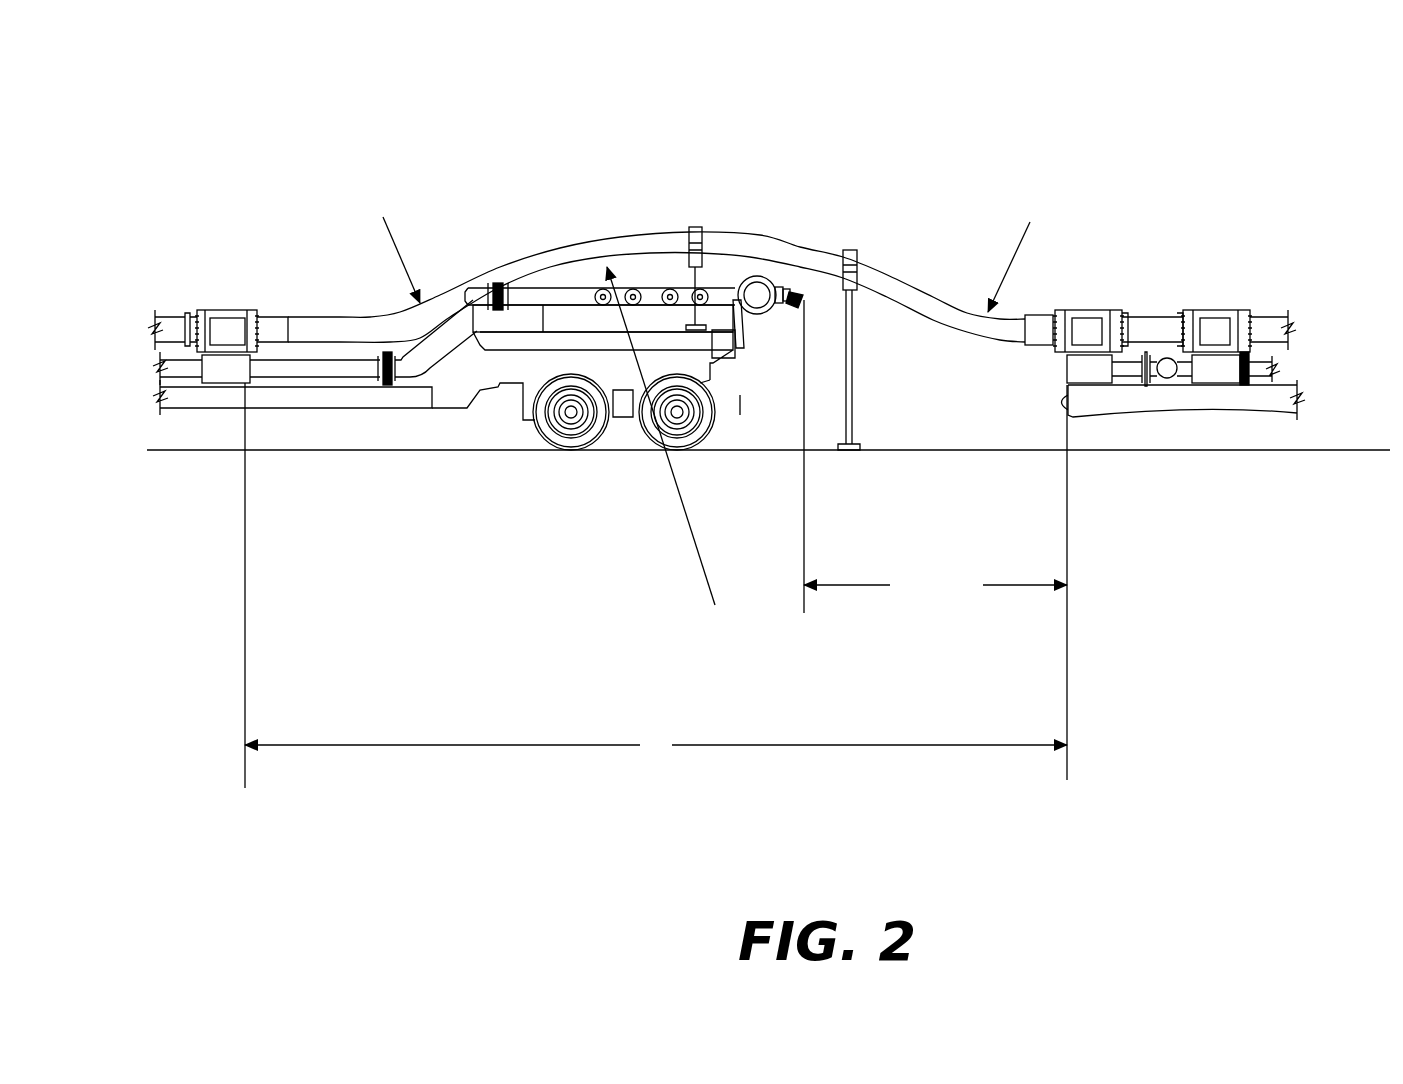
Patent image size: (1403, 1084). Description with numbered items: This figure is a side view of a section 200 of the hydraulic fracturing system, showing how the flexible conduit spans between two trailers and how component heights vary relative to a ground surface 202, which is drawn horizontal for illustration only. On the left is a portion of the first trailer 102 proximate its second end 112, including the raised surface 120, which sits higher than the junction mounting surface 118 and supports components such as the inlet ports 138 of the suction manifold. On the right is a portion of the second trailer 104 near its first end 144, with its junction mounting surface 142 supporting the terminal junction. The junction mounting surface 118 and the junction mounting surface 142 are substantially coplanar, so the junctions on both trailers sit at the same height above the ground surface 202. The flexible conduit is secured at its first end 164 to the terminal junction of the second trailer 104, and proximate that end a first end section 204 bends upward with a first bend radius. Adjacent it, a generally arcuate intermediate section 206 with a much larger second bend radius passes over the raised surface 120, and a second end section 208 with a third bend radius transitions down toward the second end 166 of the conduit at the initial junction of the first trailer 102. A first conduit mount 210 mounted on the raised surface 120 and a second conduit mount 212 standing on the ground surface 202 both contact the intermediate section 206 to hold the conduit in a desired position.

The section 200 is at (323, 97).
The first trailer 102 is at (220, 193).
The second trailer 104 is at (1285, 192).
The second end 166 is at (283, 317).
The second end section 208 is at (397, 322).
The intermediate section 206 is at (660, 248).
The first end section 204 is at (967, 320).
The first conduit mount 210 is at (700, 235).
The inlet ports 138 is at (792, 295).
The second conduit mount 212 is at (852, 333).
The second end 112 is at (617, 426).
The junction mounting surface 118 is at (340, 385).
The raised surface 120 is at (583, 330).
The ground surface 202 is at (200, 450).
The first end 164 is at (1038, 320).
The first end 144 is at (1105, 444).
The junction mounting surface 142 is at (1180, 387).